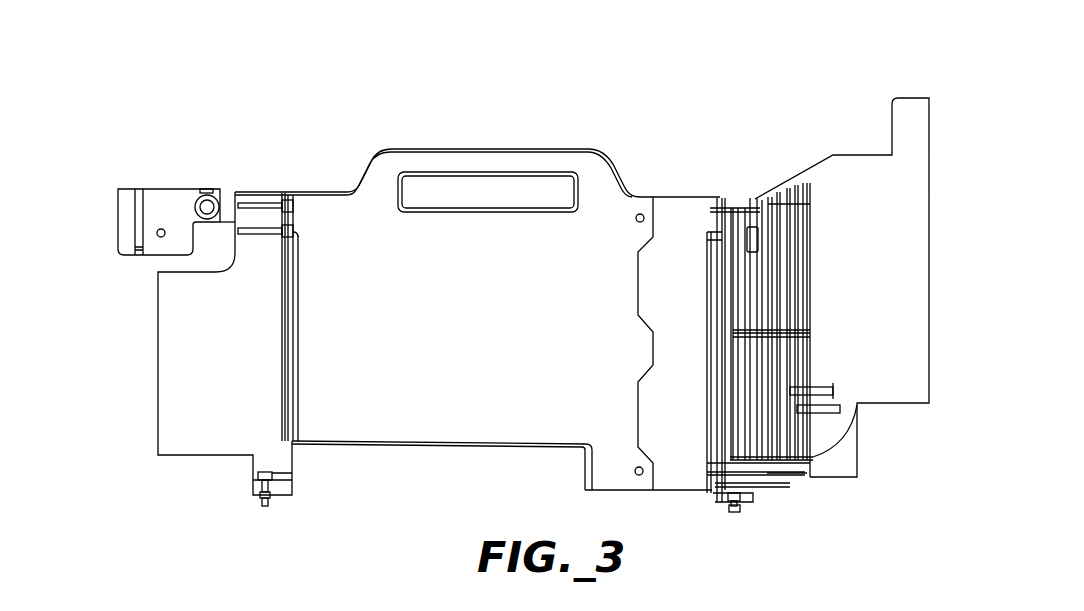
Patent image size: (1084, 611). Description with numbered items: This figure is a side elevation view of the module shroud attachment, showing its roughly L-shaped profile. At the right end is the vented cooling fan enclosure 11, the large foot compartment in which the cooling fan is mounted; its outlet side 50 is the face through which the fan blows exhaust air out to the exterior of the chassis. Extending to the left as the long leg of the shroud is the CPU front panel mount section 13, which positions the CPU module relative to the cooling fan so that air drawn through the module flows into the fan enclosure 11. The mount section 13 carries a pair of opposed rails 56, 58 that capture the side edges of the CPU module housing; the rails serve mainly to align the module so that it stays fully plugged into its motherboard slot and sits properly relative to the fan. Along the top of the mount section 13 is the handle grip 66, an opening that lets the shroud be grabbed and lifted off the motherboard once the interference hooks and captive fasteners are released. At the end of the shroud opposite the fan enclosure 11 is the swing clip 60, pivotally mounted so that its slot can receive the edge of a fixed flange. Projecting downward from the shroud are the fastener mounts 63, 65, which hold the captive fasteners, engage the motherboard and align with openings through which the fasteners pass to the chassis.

The vented cooling fan enclosure 11 is at (910, 405).
The CPU front panel mount section 13 is at (323, 190).
The outlet side 50 is at (930, 140).
The rail 56 is at (704, 432).
The rail 58 is at (298, 422).
The swing clip 60 is at (183, 188).
The fastener mount 63 is at (285, 498).
The fastener mount 65 is at (745, 510).
The handle grip 66 is at (533, 149).